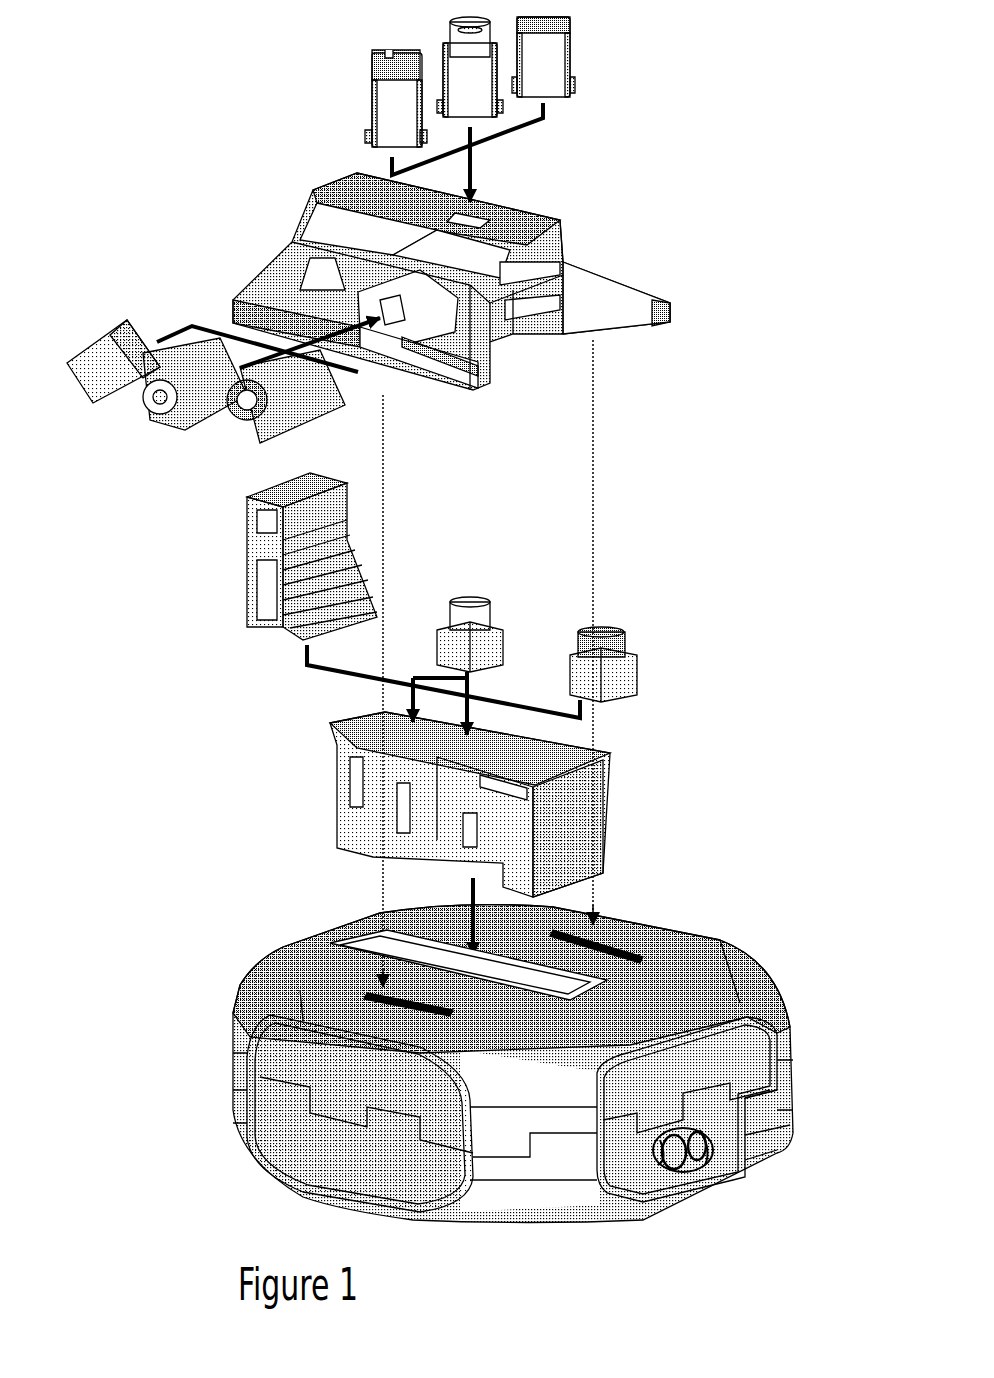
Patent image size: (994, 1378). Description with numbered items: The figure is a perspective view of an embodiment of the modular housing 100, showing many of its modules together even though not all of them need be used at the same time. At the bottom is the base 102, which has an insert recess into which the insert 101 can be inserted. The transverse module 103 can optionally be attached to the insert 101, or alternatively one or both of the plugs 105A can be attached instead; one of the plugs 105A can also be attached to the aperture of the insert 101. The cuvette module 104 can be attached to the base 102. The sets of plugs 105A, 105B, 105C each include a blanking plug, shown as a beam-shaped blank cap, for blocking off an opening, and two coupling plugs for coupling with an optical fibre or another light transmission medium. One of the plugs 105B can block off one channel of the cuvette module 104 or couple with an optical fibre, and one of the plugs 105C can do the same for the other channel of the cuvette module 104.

The modular housing 100 is at (156, 138).
The insert 101 is at (326, 798).
The base 102 is at (236, 967).
The transverse module 103 is at (234, 591).
The cuvette module 104 is at (654, 258).
The plugs 105A is at (625, 583).
The plugs 105B is at (134, 453).
The plugs 105C is at (608, 57).